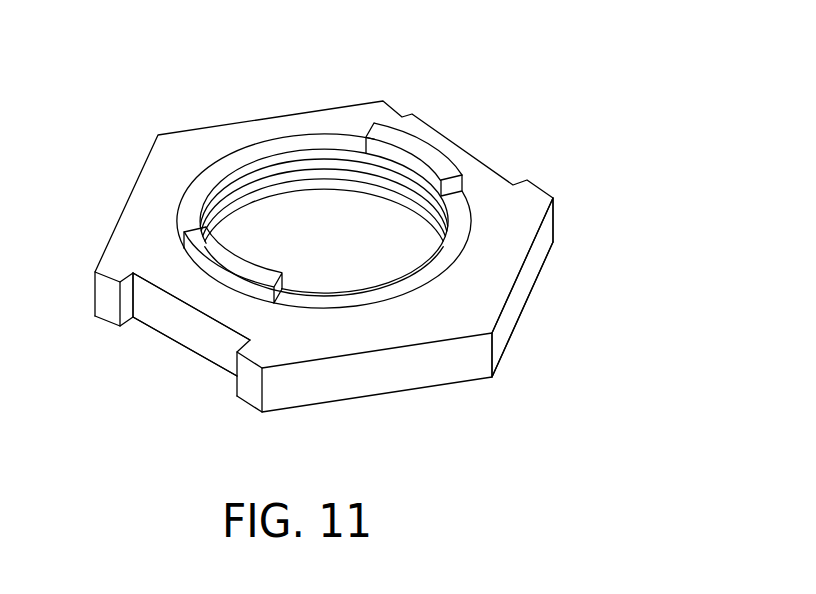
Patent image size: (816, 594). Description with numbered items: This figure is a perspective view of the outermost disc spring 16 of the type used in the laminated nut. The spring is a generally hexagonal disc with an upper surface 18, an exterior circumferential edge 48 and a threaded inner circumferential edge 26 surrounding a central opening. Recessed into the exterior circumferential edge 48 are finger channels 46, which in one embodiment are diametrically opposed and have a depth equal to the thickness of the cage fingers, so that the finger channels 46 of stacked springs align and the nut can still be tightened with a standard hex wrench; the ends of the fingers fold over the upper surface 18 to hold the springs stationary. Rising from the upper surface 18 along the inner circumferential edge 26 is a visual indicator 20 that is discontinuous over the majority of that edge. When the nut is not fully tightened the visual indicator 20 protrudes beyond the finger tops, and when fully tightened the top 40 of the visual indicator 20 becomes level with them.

The outermost spring 16 is at (373, 230).
The upper surface 18 is at (314, 122).
The visual indicator 20 is at (235, 280).
The inner circumferential edge 26 is at (428, 268).
The top of the visual indicator 40 is at (433, 152).
The finger channel 46 is at (160, 317).
The exterior circumferential edge 48 is at (518, 293).